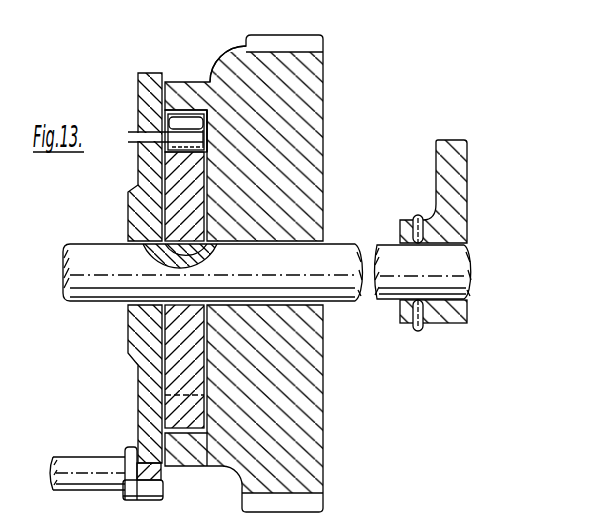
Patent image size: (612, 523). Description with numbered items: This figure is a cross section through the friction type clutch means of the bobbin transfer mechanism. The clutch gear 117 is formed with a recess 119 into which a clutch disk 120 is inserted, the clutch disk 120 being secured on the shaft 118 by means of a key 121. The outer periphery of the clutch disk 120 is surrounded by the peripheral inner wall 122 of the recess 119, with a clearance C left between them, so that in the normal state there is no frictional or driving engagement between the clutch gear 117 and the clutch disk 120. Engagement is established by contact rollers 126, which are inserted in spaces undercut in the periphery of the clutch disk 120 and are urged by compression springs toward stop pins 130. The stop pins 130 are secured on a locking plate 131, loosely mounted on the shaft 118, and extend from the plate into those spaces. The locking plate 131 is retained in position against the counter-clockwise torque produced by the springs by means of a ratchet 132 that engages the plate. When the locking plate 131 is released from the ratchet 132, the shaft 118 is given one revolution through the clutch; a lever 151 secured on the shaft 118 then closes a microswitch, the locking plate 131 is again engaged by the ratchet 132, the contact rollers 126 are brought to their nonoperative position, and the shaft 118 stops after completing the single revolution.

The clutch gear 117 is at (310, 137).
The shaft 118 is at (337, 250).
The recess 119 is at (216, 109).
The clutch disk 120 is at (172, 163).
The key 121 is at (170, 238).
The peripheral inner wall 122 is at (169, 110).
The contact rollers 126 is at (180, 123).
The stop pins 130 is at (149, 138).
The locking plate 131 is at (154, 74).
The ratchet 132 is at (157, 477).
The lever 151 is at (457, 217).
The clearance C is at (208, 109).